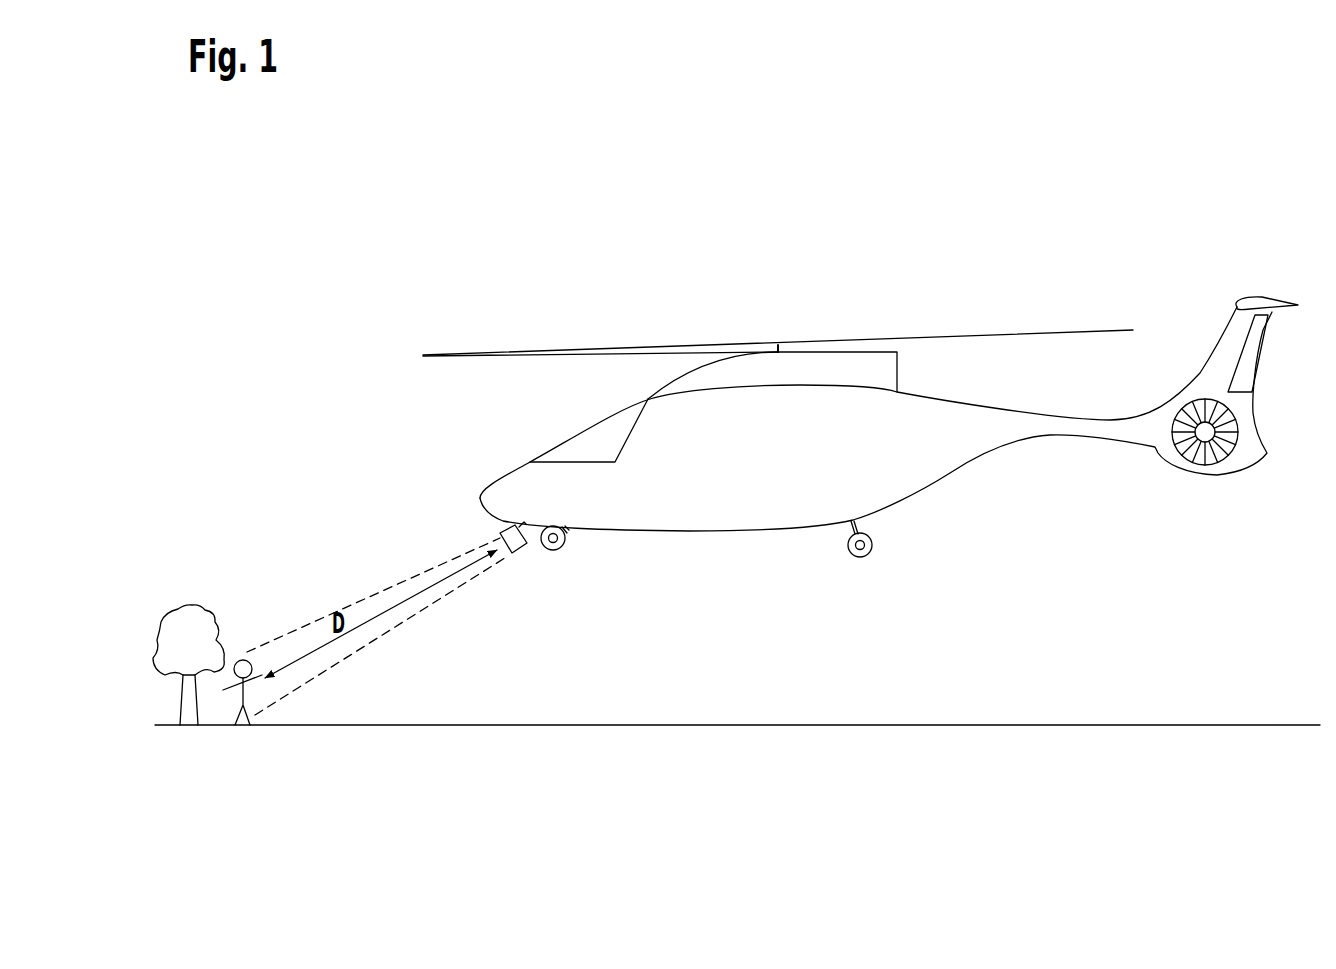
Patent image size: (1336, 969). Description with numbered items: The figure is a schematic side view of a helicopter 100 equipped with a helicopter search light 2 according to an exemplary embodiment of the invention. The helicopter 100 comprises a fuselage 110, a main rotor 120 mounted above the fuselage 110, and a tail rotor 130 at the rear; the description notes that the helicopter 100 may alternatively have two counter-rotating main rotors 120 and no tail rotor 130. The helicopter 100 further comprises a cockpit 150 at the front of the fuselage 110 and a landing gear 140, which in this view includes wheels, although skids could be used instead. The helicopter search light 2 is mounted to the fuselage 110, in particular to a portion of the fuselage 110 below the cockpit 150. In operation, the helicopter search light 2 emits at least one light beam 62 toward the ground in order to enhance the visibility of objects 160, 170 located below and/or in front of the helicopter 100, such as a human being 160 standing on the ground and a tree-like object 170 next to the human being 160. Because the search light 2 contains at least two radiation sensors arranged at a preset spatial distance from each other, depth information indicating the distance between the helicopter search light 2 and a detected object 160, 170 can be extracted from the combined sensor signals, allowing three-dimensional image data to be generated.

The helicopter 100 is at (1017, 240).
The fuselage 110 is at (952, 502).
The main rotor 120 is at (1113, 317).
The tail rotor 130 is at (1183, 495).
The landing gear 140 is at (565, 555).
The cockpit 150 is at (555, 427).
The helicopter search light 2 is at (503, 565).
The light beam 62 is at (355, 588).
The human being 160 is at (238, 647).
The object 170 is at (187, 600).